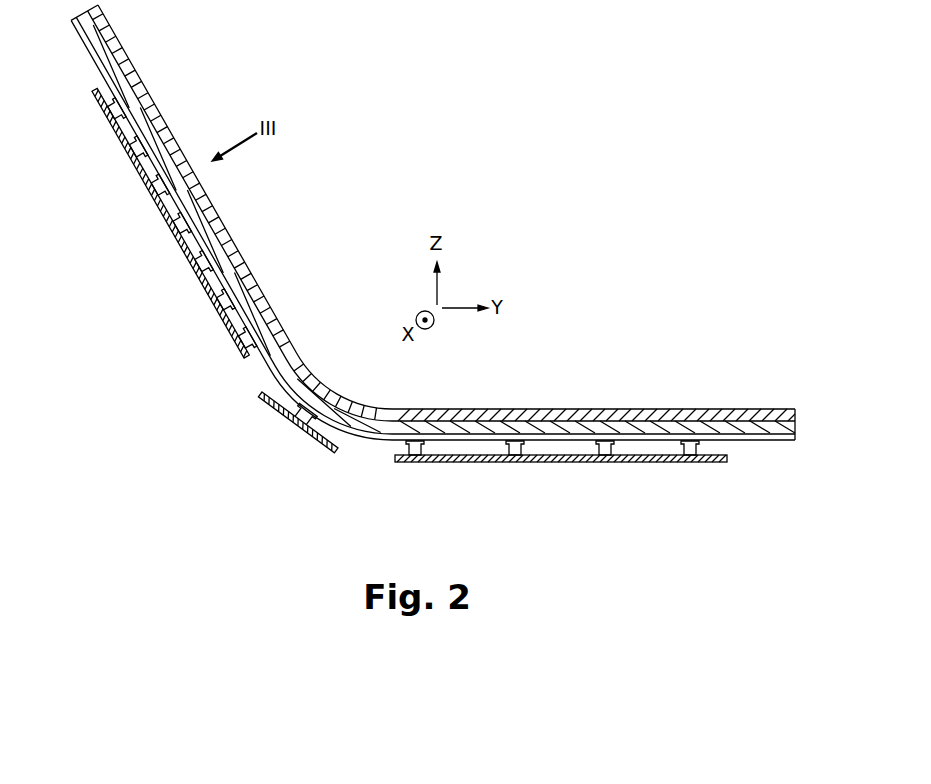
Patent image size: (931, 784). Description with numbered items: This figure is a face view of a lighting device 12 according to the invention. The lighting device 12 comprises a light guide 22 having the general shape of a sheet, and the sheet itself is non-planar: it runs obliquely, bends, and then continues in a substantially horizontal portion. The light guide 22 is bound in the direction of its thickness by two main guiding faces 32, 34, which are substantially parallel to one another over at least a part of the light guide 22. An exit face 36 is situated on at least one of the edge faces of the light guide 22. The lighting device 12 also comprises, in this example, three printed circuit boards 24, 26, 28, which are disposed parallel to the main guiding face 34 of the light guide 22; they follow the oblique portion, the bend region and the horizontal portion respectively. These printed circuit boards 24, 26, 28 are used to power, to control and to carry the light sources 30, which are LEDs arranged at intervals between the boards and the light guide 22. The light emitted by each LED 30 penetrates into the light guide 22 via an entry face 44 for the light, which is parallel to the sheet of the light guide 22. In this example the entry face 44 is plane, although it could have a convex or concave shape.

The lighting device 12 is at (176, 96).
The light guide 22 is at (485, 396).
The printed circuit board 24 is at (183, 255).
The printed circuit board 26 is at (318, 432).
The printed circuit board 28 is at (472, 462).
The light source 30 is at (158, 200).
The main guiding face 32 is at (624, 406).
The main guiding face 34 is at (374, 446).
The exit face 36 is at (652, 427).
The entry face 44 is at (515, 456).